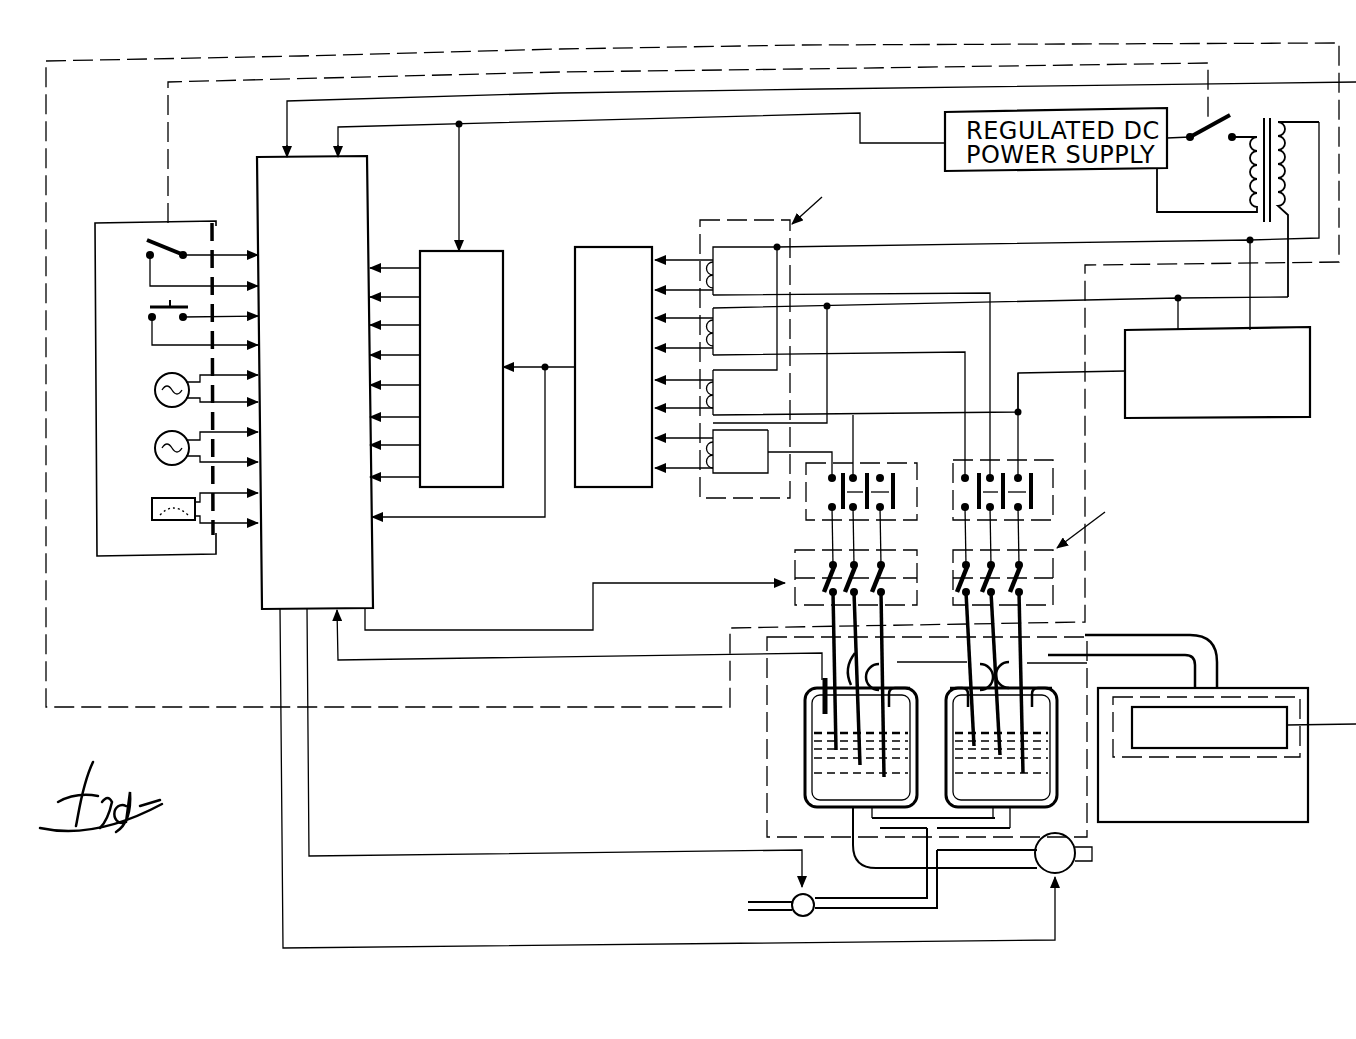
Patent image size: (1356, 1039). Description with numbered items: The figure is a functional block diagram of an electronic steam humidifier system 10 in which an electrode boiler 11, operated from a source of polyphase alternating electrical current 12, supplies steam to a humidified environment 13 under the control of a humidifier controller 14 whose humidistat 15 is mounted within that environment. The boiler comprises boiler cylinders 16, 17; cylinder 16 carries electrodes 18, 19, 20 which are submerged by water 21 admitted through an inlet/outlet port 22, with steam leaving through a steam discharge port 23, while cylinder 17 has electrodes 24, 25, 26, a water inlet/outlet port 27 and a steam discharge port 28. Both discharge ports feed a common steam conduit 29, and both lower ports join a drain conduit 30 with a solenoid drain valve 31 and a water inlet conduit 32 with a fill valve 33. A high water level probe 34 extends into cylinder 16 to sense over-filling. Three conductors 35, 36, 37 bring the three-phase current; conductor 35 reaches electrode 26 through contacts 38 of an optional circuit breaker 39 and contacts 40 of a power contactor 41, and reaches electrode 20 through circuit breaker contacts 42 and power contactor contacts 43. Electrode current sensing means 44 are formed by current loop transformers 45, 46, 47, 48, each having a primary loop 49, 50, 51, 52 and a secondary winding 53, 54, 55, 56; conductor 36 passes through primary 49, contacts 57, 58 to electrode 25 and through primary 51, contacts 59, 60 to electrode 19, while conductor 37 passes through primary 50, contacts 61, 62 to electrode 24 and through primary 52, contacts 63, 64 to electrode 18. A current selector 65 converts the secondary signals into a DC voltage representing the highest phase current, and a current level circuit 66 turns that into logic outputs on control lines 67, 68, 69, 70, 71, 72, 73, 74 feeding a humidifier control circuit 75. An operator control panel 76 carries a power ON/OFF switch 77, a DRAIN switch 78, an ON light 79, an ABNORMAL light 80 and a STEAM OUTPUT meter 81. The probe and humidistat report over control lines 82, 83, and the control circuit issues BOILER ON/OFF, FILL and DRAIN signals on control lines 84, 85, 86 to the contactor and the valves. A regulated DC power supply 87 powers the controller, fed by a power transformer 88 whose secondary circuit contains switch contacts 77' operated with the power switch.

The humidifier system 10 is at (1142, 836).
The electrode boiler 11 is at (766, 792).
The source of polyphase alternating electrical current 12 is at (1250, 420).
The humidified environment 13 is at (1268, 824).
The humidifier controller 14 is at (490, 708).
The humidistat 15 is at (1282, 708).
The boiler cylinder 16 is at (837, 805).
The boiler cylinder 17 is at (1050, 785).
The electrode 18 is at (834, 748).
The electrode 19 is at (858, 760).
The electrode 20 is at (885, 776).
The water 21 is at (886, 755).
The inlet/outlet port 22 is at (866, 800).
The steam discharge port 23 is at (907, 680).
The electrode 24 is at (972, 746).
The electrode 25 is at (1002, 754).
The electrode 26 is at (1025, 772).
The water inlet/outlet port 27 is at (1002, 798).
The steam discharge port 28 is at (1010, 684).
The steam conduit 29 is at (1165, 627).
The drain conduit 30 is at (981, 853).
The drain valve 31 is at (1043, 868).
The water inlet conduit 32 is at (895, 908).
The fill valve 33 is at (806, 917).
The high water level probe 34 is at (822, 706).
The conductor 35 is at (1040, 373).
The conductor 36 is at (1255, 313).
The conductor 37 is at (1178, 312).
The contacts 38 is at (1011, 464).
The circuit breaker 39 is at (1055, 478).
The contacts 40 is at (1028, 561).
The power contactor 41 is at (916, 565).
The circuit breaker contacts 42 is at (855, 469).
The power contactor contacts 43 is at (829, 564).
The electrode current sensing means 44 is at (745, 220).
The current loop transformer 45 is at (744, 259).
The current loop transformer 46 is at (735, 330).
The current loop transformer 47 is at (735, 391).
The current loop transformer 48 is at (737, 449).
The primary loop 49 is at (718, 262).
The primary loop 50 is at (722, 324).
The primary loop 51 is at (722, 386).
The primary loop 52 is at (722, 444).
The secondary winding 53 is at (708, 274).
The secondary winding 54 is at (708, 334).
The secondary winding 55 is at (708, 394).
The secondary winding 56 is at (708, 454).
The circuit breaker contacts 57 is at (1000, 474).
The power contactor contacts 58 is at (1000, 557).
The circuit breaker contacts 59 is at (856, 475).
The power contactor contacts 60 is at (850, 566).
The circuit breaker contacts 61 is at (968, 475).
The power contactor contacts 62 is at (968, 567).
The circuit breaker contacts 63 is at (830, 479).
The power contactor contacts 64 is at (826, 568).
The current selector 65 is at (622, 246).
The current level circuit 66 is at (490, 250).
The control line 67 is at (395, 467).
The control line 68 is at (395, 435).
The control line 69 is at (395, 407).
The control line 70 is at (395, 375).
The control line 71 is at (395, 345).
The control line 72 is at (395, 315).
The control line 73 is at (395, 287).
The control line 74 is at (395, 258).
The humidifier control circuit 75 is at (374, 196).
The operator control panel 76 is at (208, 222).
The power ON/OFF switch 77 is at (202, 255).
The switch contacts 77' is at (1201, 145).
The external DRAIN switch 78 is at (190, 307).
The ON light 79 is at (176, 374).
The ABNORMAL light 80 is at (176, 432).
The STEAM OUTPUT meter 81 is at (168, 497).
The control line 82 is at (697, 655).
The control line 83 is at (285, 101).
The control line 84 is at (690, 583).
The control line 85 is at (690, 850).
The control line 86 is at (690, 942).
The regulated DC power supply 87 is at (945, 118).
The power transformer 88 is at (1281, 132).